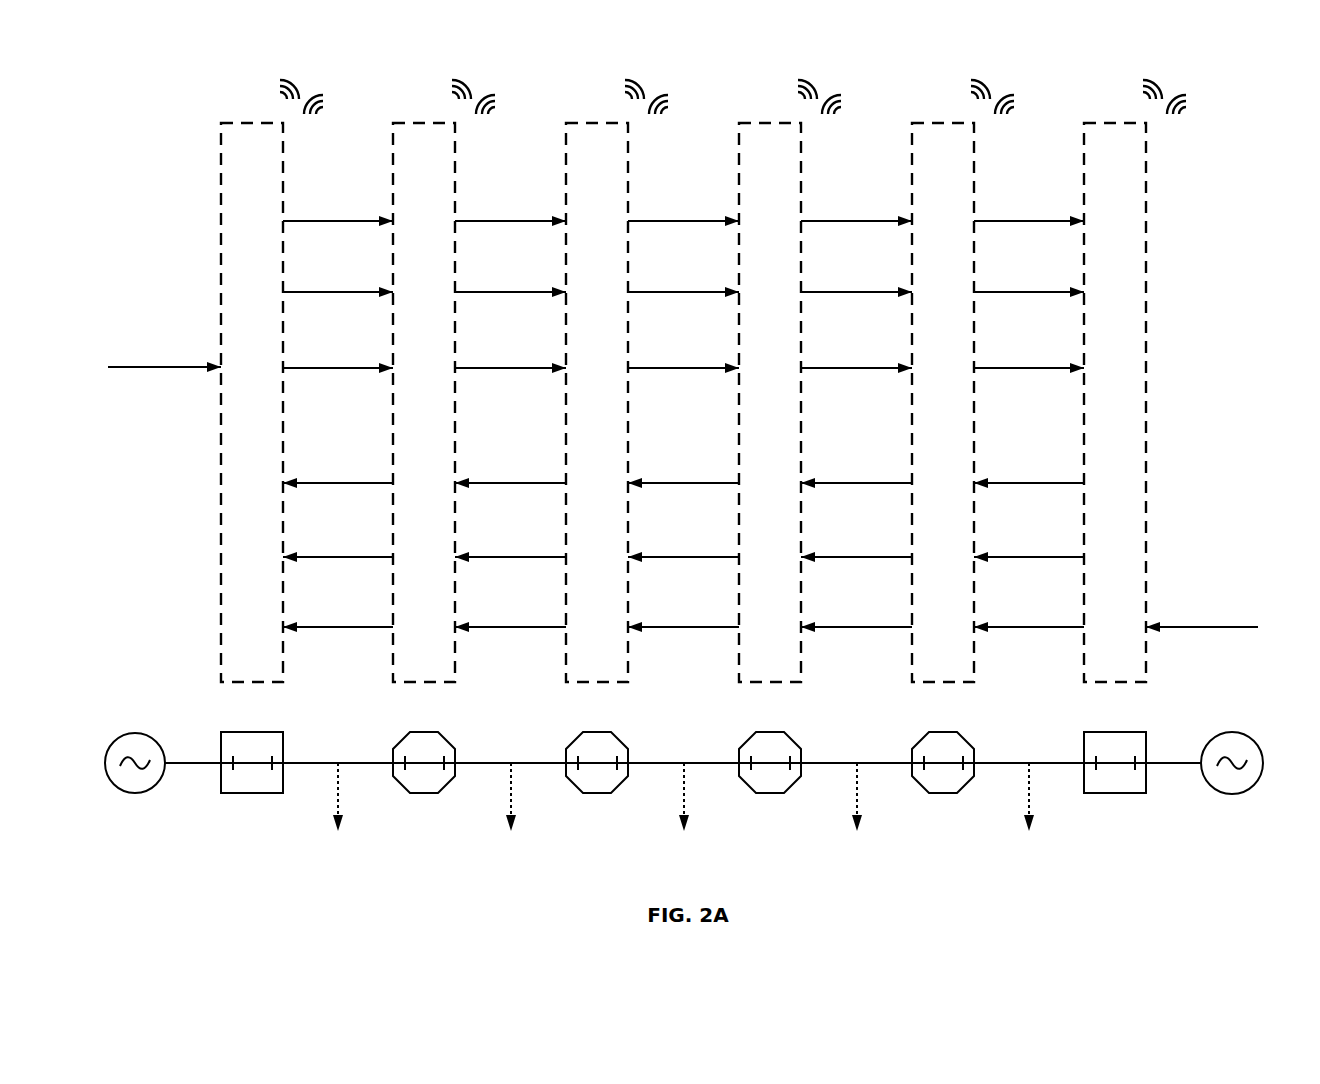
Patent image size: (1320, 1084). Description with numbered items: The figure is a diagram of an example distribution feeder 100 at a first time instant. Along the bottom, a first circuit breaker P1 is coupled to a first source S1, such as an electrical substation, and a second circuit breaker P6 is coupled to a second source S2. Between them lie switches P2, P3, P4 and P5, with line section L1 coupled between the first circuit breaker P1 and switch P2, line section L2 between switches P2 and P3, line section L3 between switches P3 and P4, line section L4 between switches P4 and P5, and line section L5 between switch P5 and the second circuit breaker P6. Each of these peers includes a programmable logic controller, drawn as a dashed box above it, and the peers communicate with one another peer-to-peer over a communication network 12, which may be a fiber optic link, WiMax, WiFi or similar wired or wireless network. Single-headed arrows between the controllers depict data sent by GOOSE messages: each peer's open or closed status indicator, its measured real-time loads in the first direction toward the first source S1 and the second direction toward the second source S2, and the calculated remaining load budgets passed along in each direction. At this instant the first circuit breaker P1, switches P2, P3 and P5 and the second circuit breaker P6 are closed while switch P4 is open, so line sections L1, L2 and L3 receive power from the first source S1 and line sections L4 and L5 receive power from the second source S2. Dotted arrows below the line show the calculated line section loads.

The distribution feeder 100 is at (1247, 168).
The communication network 12 is at (324, 103).
The first source S1 is at (135, 776).
The second source S2 is at (1232, 775).
The first circuit breaker P1 is at (252, 775).
The switch P2 is at (424, 775).
The switch P3 is at (597, 775).
The switch P4 is at (770, 775).
The switch P5 is at (943, 775).
The second circuit breaker P6 is at (1115, 775).
The line section L1 is at (338, 782).
The line section L2 is at (511, 782).
The line section L3 is at (684, 782).
The line section L4 is at (857, 782).
The line section L5 is at (1029, 782).